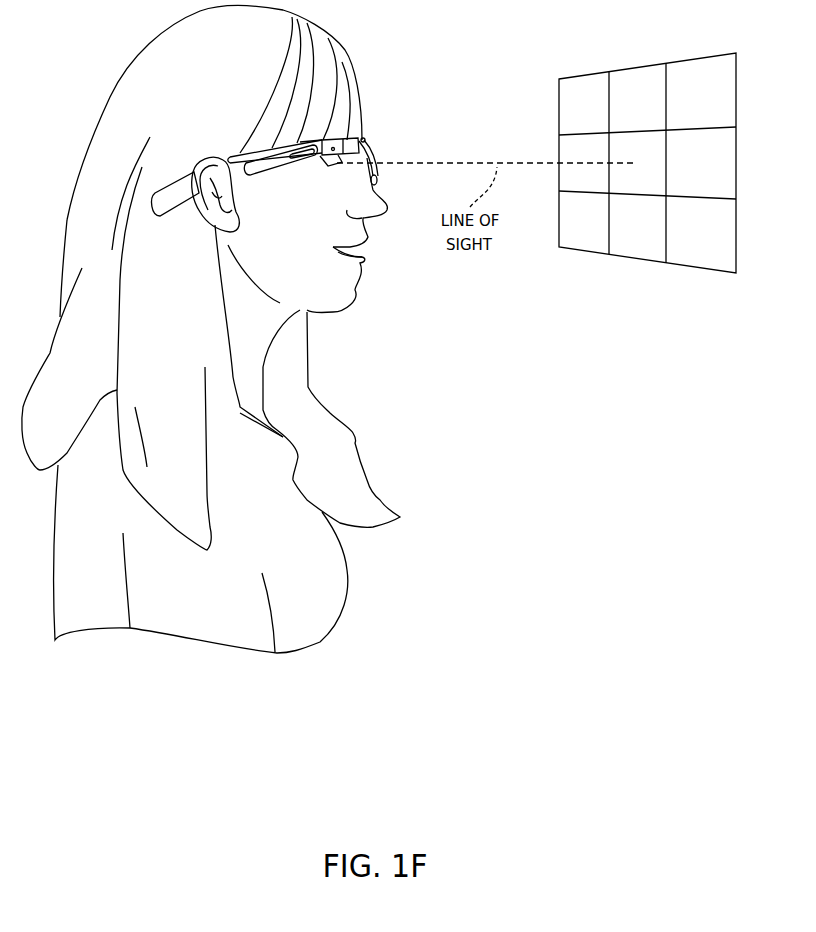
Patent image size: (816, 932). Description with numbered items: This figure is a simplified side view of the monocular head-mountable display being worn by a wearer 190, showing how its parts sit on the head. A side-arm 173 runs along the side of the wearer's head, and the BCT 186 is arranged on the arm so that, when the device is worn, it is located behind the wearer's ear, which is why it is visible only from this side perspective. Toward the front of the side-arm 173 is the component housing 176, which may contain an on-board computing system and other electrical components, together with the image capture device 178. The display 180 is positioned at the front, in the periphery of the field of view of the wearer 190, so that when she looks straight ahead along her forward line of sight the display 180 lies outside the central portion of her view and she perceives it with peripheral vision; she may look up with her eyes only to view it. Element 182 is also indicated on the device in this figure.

The wearer 190 is at (101, 100).
The side-arms 173 is at (240, 152).
The component housing 176 is at (273, 177).
The image capture device 178 is at (336, 140).
The display 180 is at (362, 141).
The display element 182 is at (303, 149).
The BCT 186 is at (168, 203).